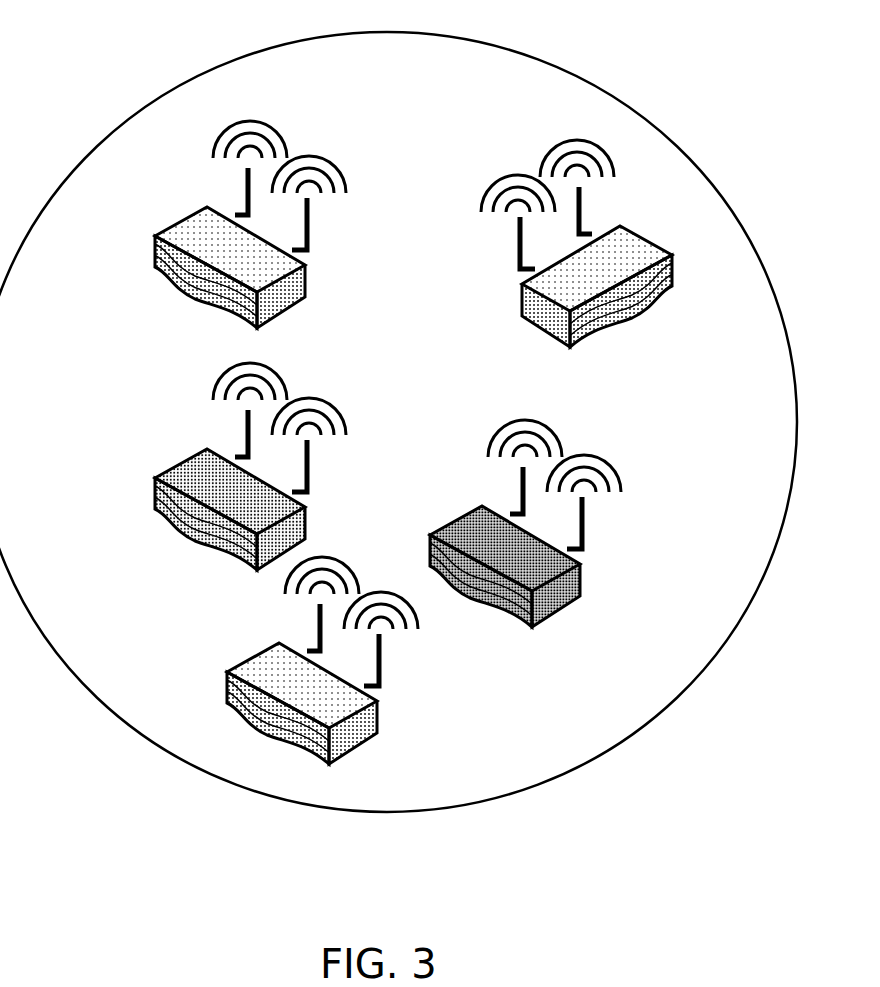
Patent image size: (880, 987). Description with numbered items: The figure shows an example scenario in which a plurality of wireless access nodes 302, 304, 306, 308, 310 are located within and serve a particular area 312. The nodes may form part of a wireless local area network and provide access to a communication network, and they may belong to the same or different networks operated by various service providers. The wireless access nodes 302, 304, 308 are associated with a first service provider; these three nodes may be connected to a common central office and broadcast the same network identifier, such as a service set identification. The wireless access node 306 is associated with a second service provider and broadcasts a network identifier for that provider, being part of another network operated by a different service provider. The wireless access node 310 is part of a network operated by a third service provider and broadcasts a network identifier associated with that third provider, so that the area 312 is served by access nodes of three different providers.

The wireless access node 302 is at (180, 221).
The wireless access node 304 is at (520, 282).
The wireless access node 306 is at (311, 508).
The wireless access node 308 is at (380, 700).
The wireless access node 310 is at (584, 563).
The area 312 is at (243, 55).